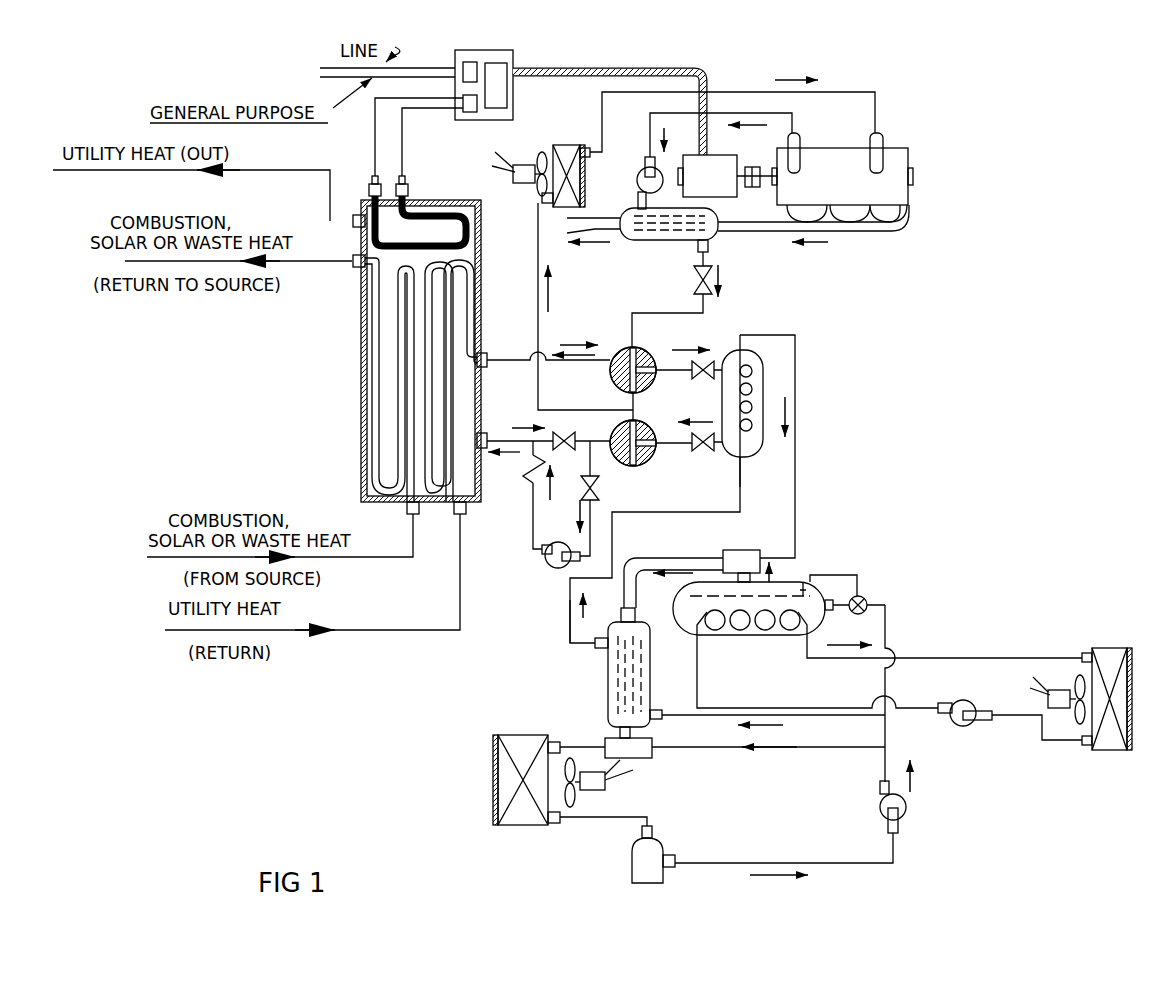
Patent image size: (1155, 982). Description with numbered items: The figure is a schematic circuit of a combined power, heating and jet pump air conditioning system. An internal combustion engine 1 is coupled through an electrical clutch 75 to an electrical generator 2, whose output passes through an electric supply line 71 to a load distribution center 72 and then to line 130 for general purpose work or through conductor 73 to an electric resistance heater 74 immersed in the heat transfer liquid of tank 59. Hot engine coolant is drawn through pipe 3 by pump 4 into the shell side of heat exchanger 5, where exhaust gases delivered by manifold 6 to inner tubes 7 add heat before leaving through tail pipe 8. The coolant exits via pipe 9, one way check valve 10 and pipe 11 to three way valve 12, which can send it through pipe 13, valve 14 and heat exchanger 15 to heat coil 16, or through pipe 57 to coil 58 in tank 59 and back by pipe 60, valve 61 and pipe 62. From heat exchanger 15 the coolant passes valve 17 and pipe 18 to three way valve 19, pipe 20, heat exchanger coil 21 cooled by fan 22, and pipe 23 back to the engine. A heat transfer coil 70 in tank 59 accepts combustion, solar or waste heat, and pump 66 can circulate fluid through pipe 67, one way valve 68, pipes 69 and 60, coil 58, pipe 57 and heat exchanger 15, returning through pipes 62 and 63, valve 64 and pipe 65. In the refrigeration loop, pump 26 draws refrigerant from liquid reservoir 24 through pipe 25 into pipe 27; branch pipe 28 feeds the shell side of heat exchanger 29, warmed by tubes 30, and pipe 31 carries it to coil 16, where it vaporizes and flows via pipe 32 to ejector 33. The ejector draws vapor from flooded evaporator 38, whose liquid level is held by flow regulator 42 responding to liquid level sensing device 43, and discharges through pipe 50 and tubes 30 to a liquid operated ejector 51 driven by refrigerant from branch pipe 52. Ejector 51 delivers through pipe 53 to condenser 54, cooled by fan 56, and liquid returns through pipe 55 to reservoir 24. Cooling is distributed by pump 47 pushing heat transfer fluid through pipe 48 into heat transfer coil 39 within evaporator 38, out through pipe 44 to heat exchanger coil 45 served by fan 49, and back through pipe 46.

The internal combustion engine 1 is at (893, 149).
The electrical generator 2 is at (708, 160).
The pipe 3 is at (794, 113).
The pump 4 is at (643, 167).
The heat exchanger 5 is at (669, 243).
The manifold 6 is at (856, 231).
The inner tubes 7 is at (640, 222).
The tail pipe 8 is at (590, 218).
The pipe 9 is at (708, 258).
The one way check valve 10 is at (693, 282).
The pipe 11 is at (668, 314).
The three way valve 12 is at (622, 351).
The pipe 13 is at (670, 372).
The valve 14 is at (707, 380).
The heat exchanger 15 is at (735, 352).
The heat exchanger coil 16 is at (749, 392).
The valve 17 is at (709, 454).
The pipe 18 is at (672, 447).
The three way valve 19 is at (638, 466).
The pipe 20 is at (566, 410).
The heat exchanger coil 21 is at (570, 145).
The thermostatically controlled motor-driven fan 22 is at (520, 165).
The pipe 23 is at (601, 101).
The liquid reservoir 24 is at (663, 843).
The pipe 25 is at (810, 862).
The pump 26 is at (910, 807).
The pipe 27 is at (885, 765).
The branch pipe 28 is at (870, 717).
The heat exchanger 29 is at (639, 673).
The tubes 30 is at (637, 663).
The pipe 31 is at (570, 611).
The pipe 32 is at (796, 472).
The ejector 33 is at (738, 550).
The flooded type evaporator 38 is at (722, 637).
The heat transfer coil 39 is at (760, 637).
The flow regulator 42 is at (867, 599).
The liquid level sensing device 43 is at (823, 573).
The pipe 44 is at (972, 656).
The heat exchanger coil 45 is at (1120, 648).
The pipe 46 is at (1066, 740).
The pump 47 is at (968, 724).
The pipe 48 is at (810, 708).
The motor operated fan 49 is at (1053, 690).
The pipe 50 is at (657, 558).
The liquid operated ejector 51 is at (653, 758).
The branch pipe 52 is at (793, 748).
The pipe 53 is at (572, 743).
The condenser 54 is at (538, 826).
The pipe 55 is at (602, 818).
The motor operated fan 56 is at (607, 788).
The pipe 57 is at (515, 365).
The heat transfer coil 58 is at (467, 262).
The tank 59 is at (480, 288).
The pipe 60 is at (500, 437).
The valve 61 is at (534, 433).
The pipe 62 is at (592, 440).
The pipe 63 is at (590, 453).
The valve 64 is at (573, 522).
The pipe 65 is at (593, 510).
The pump 66 is at (552, 564).
The pipe 67 is at (533, 523).
The one way valve 68 is at (527, 485).
The pipe 69 is at (530, 457).
The heat transfer coil 70 is at (460, 340).
The electric supply line 71 is at (666, 69).
The load distribution center 72 is at (514, 52).
The conductor 73 is at (401, 170).
The electric resistance heater 74 is at (433, 210).
The electrical clutch 75 is at (752, 187).
The line 130 is at (377, 40).